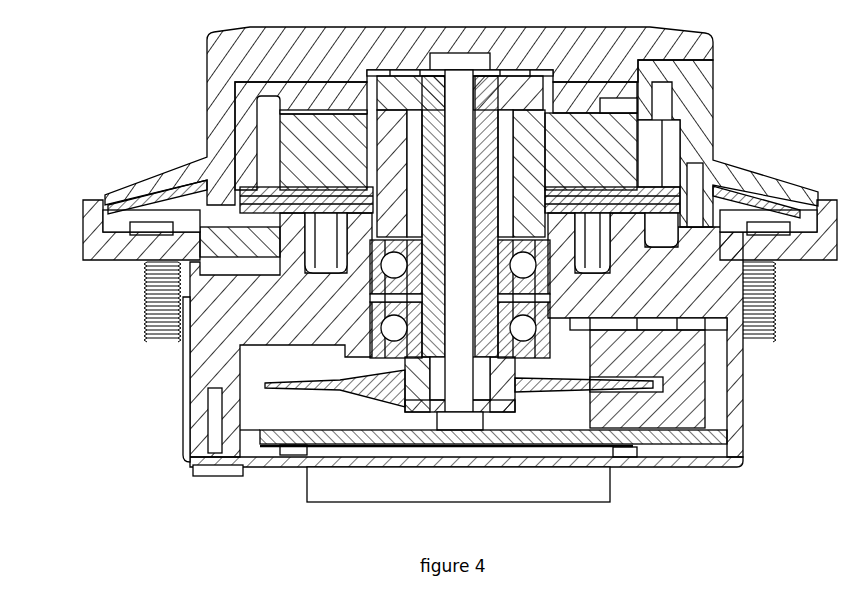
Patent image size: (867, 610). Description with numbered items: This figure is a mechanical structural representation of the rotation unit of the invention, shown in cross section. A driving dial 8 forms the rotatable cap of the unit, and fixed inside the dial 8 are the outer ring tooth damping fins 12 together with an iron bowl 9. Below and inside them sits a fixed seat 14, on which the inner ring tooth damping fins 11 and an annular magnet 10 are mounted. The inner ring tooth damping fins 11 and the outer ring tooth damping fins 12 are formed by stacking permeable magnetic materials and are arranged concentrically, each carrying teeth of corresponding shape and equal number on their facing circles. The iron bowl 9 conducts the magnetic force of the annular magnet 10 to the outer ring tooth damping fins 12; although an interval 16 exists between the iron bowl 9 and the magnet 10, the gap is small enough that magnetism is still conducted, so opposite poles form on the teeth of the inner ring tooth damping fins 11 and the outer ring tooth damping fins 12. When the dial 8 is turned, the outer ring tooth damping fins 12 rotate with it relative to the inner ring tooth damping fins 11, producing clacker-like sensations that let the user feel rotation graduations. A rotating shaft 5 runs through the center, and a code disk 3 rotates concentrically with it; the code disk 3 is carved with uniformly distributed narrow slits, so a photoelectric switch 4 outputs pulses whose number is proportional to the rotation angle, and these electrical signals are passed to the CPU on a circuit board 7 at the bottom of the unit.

The code disk 3 is at (590, 397).
The photoelectric switch 4 is at (677, 390).
The rotating shaft 5 is at (483, 320).
The circuit board 7 is at (290, 448).
The dial 8 is at (307, 53).
The iron bowl 9 is at (273, 90).
The annular magnet 10 is at (330, 154).
The inner ring tooth damping fins 11 is at (288, 192).
The outer ring tooth damping fins 12 is at (232, 207).
The fixed seat 14 is at (275, 305).
The interval 16 is at (307, 110).